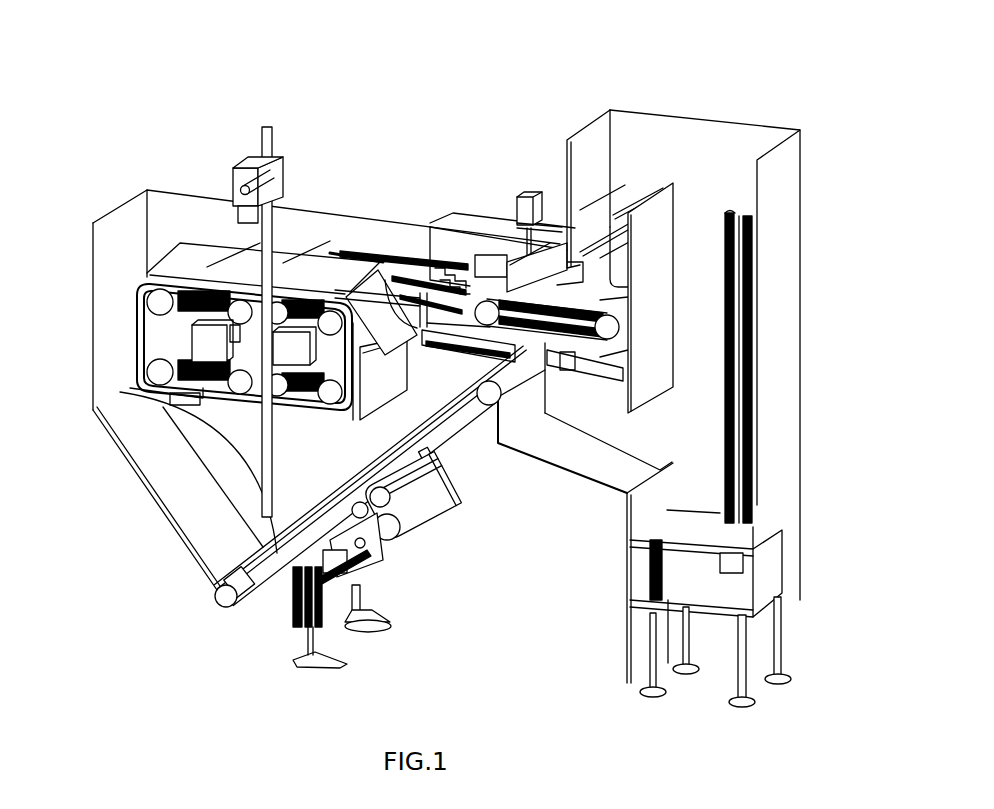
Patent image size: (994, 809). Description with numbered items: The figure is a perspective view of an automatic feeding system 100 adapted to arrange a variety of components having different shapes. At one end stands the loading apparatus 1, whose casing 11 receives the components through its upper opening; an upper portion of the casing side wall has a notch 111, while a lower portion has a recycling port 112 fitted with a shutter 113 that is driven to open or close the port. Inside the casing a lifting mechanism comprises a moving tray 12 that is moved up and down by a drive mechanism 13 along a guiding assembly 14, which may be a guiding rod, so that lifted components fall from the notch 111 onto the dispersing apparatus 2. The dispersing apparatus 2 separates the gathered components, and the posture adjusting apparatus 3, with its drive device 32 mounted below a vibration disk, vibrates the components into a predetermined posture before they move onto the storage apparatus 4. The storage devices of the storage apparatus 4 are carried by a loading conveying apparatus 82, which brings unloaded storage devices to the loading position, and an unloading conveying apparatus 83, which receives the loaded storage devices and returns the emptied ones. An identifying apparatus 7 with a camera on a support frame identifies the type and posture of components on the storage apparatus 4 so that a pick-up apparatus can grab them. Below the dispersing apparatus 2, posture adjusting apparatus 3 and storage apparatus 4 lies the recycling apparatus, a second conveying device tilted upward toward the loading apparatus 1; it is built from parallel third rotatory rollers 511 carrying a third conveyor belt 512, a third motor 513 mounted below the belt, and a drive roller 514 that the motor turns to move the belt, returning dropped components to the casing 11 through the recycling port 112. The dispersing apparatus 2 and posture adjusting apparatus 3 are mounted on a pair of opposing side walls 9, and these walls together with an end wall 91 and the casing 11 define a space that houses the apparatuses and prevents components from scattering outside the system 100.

The automatic feeding system 100 is at (428, 160).
The loading apparatus 1 is at (674, 109).
The casing 11 is at (790, 213).
The notch 111 is at (663, 190).
The recycling port 112 is at (655, 433).
The shutter 113 is at (640, 548).
The moving tray 12 is at (666, 512).
The drive mechanism 13 is at (647, 637).
The guiding assembly 14 is at (757, 497).
The dispersing apparatus 2 is at (527, 172).
The posture adjusting apparatus 3 is at (432, 265).
The drive device 32 is at (381, 272).
The storage apparatus 4 is at (287, 262).
The identifying apparatus 7 is at (246, 112).
The side walls 9 is at (210, 192).
The end wall 91 is at (116, 208).
The loading conveying apparatus 82 is at (290, 340).
The unloading conveying apparatus 83 is at (200, 335).
The third rotatory rollers 511 is at (217, 608).
The third conveyor belt 512 is at (277, 578).
The third motor 513 is at (380, 563).
The drive roller 514 is at (397, 537).